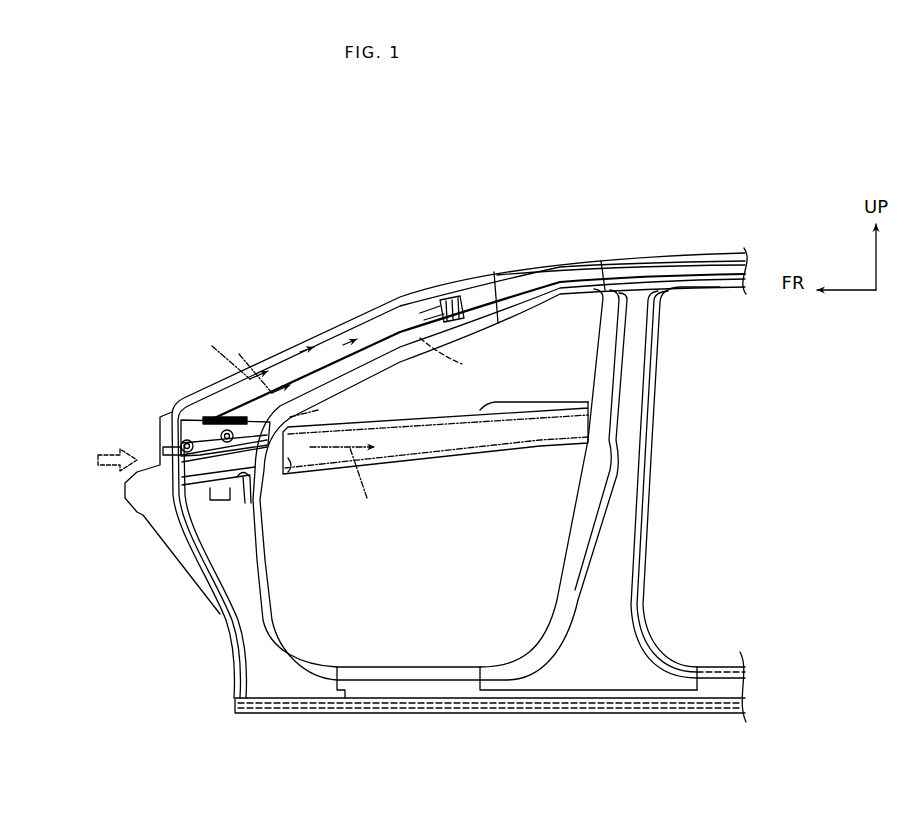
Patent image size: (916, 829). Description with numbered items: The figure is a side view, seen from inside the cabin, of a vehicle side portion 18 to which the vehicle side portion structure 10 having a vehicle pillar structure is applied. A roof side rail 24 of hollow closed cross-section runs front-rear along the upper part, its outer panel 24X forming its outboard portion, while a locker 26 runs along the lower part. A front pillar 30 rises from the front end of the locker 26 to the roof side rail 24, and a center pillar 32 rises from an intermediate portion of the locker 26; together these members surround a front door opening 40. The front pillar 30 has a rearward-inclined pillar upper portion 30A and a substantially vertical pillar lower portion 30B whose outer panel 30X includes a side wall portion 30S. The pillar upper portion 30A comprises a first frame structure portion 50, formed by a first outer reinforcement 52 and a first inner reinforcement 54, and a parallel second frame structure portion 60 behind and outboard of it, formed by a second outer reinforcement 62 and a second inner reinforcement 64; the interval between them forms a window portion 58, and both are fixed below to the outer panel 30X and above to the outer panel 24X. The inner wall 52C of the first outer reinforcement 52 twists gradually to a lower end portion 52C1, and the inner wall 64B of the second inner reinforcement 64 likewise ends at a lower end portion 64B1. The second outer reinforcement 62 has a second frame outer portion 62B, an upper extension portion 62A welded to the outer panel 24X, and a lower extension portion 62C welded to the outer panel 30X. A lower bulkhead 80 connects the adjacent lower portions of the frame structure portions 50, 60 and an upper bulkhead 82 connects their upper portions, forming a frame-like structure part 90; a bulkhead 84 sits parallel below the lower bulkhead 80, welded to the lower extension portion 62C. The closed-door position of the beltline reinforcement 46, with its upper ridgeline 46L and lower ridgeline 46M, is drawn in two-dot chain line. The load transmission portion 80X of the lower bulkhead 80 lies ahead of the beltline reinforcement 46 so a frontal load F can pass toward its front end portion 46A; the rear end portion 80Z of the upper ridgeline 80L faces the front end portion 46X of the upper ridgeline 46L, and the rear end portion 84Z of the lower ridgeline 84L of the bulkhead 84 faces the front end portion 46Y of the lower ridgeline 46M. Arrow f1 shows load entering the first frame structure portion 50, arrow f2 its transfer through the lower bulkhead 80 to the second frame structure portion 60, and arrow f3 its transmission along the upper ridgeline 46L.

The vehicle side section 10 is at (506, 248).
The vehicle side portion 18 is at (481, 254).
The roof side rail 24 is at (622, 256).
The outer panel 24X is at (567, 259).
The locker 26 is at (437, 699).
The front pillar 30 is at (289, 586).
The pillar upper portion 30A is at (260, 347).
The pillar lower portion 30B is at (213, 604).
The side wall portion 30S is at (238, 546).
The outer panel 30X is at (271, 567).
The center pillar 32 is at (638, 403).
The front door opening 40 is at (547, 326).
The beltline reinforcement 46 is at (473, 465).
The front end portion 46A is at (268, 470).
The upper ridgeline 46L is at (493, 409).
The lower ridgeline 46M is at (407, 461).
The front end portion 46X is at (342, 436).
The front end portion 46Y is at (290, 463).
The first frame structure portion 50 is at (358, 306).
The first outer reinforcement 52 is at (281, 352).
The inner wall 52C is at (298, 349).
The lower end portion 52C1 is at (174, 410).
The first inner reinforcement 54 is at (384, 318).
The window portion 58 is at (338, 342).
The second frame structure portion 60 is at (404, 360).
The second outer reinforcement 62 is at (521, 316).
The upper extension portion 62A is at (560, 285).
The second frame outer portion 62B is at (424, 344).
The lower extension portion 62C is at (272, 482).
The second inner reinforcement 64 is at (378, 369).
The inner wall 64B is at (340, 378).
The lower end portion 64B1 is at (319, 408).
The lower bulkhead 80 is at (170, 440).
The upper ridgeline 80L is at (197, 393).
The load transmission portion 80X is at (192, 436).
The rear end portion 80Z is at (214, 394).
The upper bulkhead 82 is at (423, 304).
The bulkhead 84 is at (127, 497).
The lower ridgeline 84L is at (170, 478).
The rear end portion 84Z is at (238, 465).
The frame-like structure part 90 is at (445, 345).
The load F is at (96, 460).
The arrow f1 is at (231, 351).
The arrow f2 is at (256, 361).
The arrow f3 is at (364, 482).